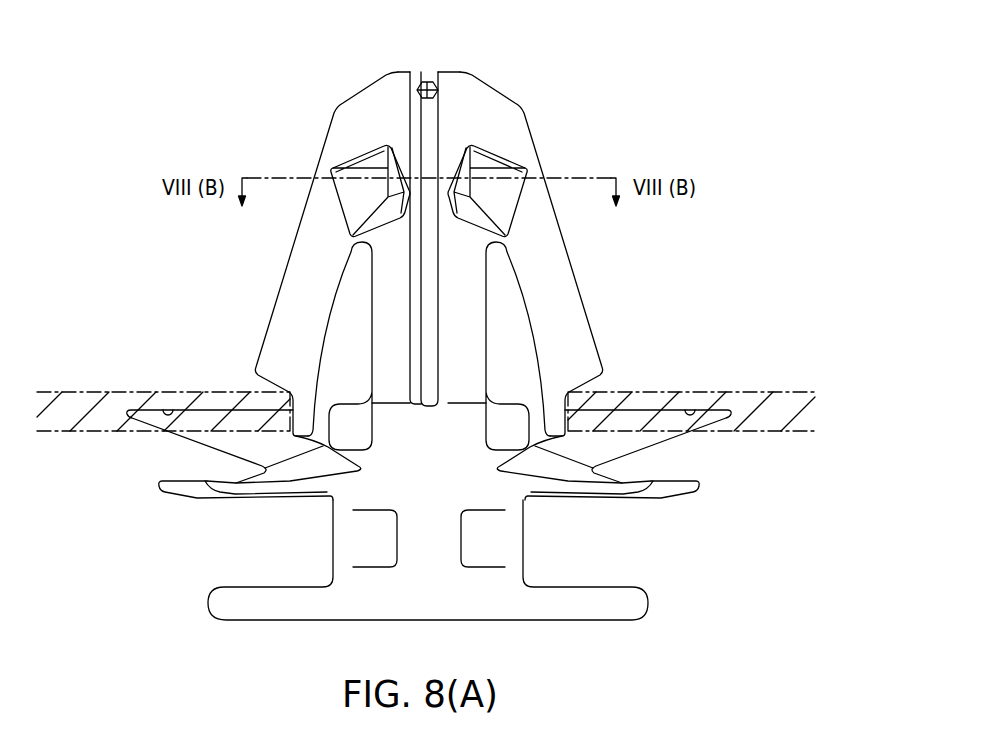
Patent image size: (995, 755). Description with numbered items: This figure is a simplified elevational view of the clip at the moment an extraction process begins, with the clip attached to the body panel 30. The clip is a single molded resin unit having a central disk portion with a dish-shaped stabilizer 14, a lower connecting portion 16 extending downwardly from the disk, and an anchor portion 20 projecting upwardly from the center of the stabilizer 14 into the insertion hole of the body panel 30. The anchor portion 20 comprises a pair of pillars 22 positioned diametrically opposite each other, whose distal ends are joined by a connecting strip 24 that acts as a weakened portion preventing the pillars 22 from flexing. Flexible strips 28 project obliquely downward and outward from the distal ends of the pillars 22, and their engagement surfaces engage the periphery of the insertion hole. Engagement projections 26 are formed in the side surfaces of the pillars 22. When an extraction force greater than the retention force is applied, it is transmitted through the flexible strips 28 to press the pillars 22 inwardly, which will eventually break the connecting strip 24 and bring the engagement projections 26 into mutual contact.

The stabilizer 14 is at (712, 418).
The lower connecting portion 16 is at (242, 633).
The anchor portion 20 is at (548, 115).
The pillars 22 is at (368, 318).
The connecting strip 24 is at (424, 80).
The engagement projections 26 is at (357, 199).
The flexible strips 28 is at (282, 268).
The body panel 30 is at (80, 402).